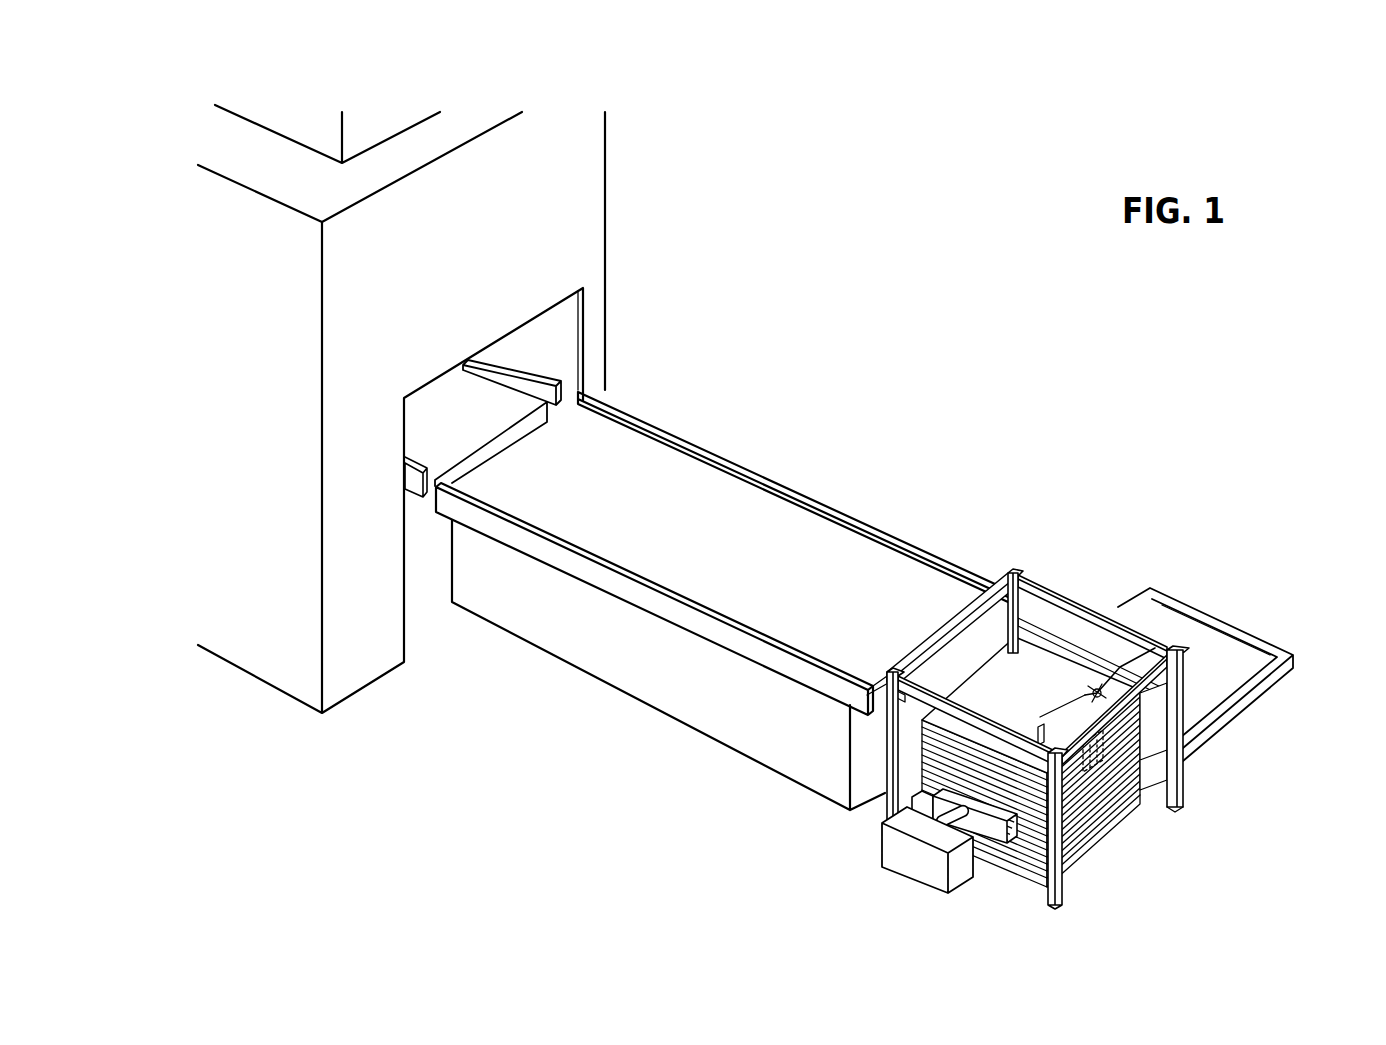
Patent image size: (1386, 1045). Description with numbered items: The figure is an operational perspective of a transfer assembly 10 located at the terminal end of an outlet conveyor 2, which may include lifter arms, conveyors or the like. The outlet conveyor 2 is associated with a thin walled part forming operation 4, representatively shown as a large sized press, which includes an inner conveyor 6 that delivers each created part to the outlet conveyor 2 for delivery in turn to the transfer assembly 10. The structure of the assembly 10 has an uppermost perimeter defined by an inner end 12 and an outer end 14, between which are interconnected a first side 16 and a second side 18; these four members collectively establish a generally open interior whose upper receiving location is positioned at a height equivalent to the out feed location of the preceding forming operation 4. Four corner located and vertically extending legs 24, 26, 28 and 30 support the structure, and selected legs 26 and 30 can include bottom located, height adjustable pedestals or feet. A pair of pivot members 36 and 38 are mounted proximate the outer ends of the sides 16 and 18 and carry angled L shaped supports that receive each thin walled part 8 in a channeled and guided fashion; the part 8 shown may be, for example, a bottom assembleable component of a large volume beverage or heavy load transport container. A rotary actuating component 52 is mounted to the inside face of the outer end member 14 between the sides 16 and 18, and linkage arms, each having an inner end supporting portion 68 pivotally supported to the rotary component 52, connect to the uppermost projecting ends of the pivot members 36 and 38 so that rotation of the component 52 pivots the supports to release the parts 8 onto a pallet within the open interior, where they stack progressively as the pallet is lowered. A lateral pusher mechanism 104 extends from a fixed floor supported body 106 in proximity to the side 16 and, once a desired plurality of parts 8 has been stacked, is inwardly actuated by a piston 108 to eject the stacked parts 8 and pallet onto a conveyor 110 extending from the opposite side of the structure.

The outlet conveyor 2 is at (722, 600).
The thin walled part forming operation 4 is at (401, 409).
The inner conveyor 6 is at (483, 428).
The thin walled part 8 is at (1031, 762).
The transfer assembly 10 is at (1067, 552).
The inner end 12 is at (950, 613).
The outer end 14 is at (1187, 687).
The side 16 is at (912, 697).
The side 18 is at (1063, 600).
The leg 24 is at (888, 802).
The leg 26 is at (1062, 892).
The leg 28 is at (1035, 607).
The leg 30 is at (1183, 790).
The pivot member 36 is at (1170, 650).
The pivot member 38 is at (1027, 732).
The rotary actuating component 52 is at (1090, 680).
The inner end supporting portion of linkage arm 68 is at (1118, 660).
The lateral pusher mechanism 104 is at (993, 827).
The fixed floor supported body 106 is at (893, 848).
The piston 108 is at (950, 822).
The conveyor 110 is at (1212, 690).